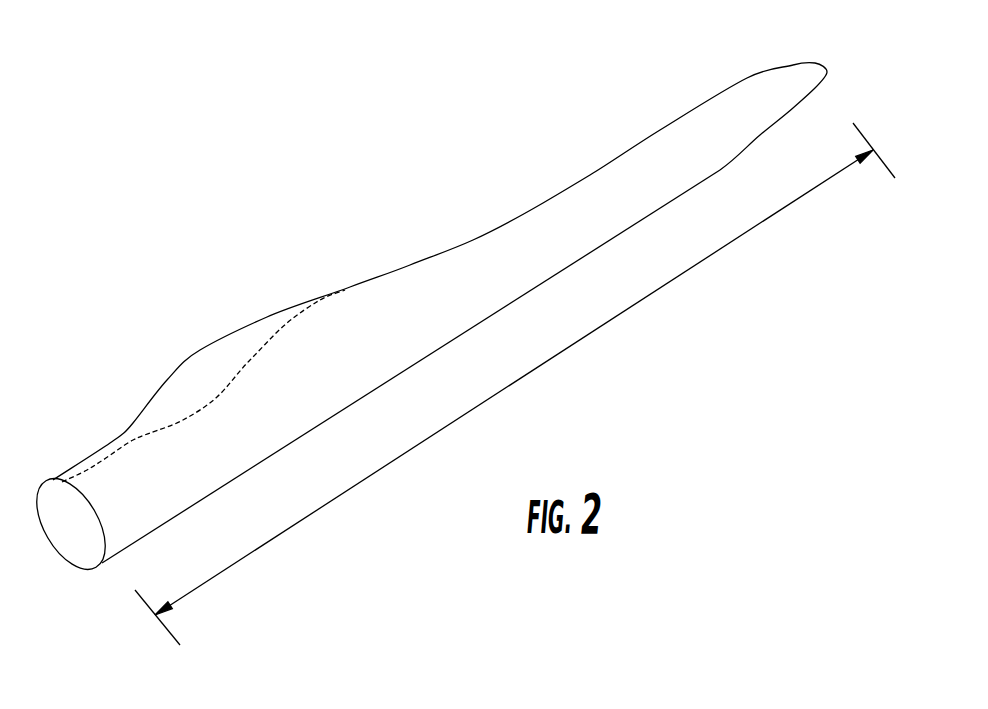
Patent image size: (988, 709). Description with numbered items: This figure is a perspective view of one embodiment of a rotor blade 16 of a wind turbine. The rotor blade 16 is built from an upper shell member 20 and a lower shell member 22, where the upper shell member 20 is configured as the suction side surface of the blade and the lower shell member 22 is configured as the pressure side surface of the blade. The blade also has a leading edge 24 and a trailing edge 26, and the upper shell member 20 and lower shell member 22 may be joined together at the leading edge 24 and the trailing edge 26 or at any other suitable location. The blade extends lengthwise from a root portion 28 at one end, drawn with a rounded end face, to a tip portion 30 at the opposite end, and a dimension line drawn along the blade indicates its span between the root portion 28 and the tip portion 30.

The rotor blade 16 is at (459, 326).
The upper shell member 20 is at (247, 395).
The lower shell member 22 is at (330, 375).
The leading edge 24 is at (545, 281).
The trailing edge 26 is at (543, 203).
The root portion 28 is at (120, 475).
The tip portion 30 is at (767, 98).